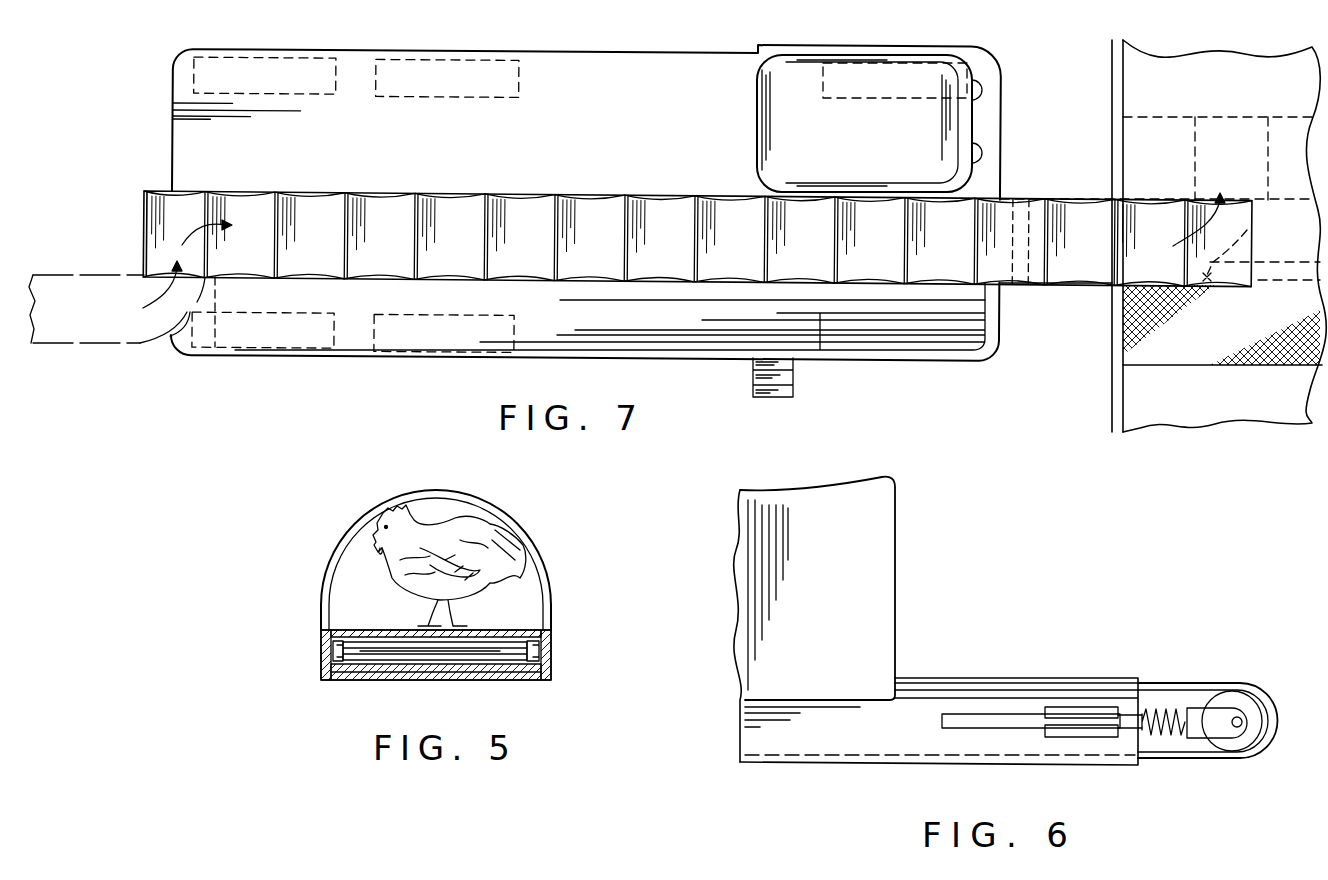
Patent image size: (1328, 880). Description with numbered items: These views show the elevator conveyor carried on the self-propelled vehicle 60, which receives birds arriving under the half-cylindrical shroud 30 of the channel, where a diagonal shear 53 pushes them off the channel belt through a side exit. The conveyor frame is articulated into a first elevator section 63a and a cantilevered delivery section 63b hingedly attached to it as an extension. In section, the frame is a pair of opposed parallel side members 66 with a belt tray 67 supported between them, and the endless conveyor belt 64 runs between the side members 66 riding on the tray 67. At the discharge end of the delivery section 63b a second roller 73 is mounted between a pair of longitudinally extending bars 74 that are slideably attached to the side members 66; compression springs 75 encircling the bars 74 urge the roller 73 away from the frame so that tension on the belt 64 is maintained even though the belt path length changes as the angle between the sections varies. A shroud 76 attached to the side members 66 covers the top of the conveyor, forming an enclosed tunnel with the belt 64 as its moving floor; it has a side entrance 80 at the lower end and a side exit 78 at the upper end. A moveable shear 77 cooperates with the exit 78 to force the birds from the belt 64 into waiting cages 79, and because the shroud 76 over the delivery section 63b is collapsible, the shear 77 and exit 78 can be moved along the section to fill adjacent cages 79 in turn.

In FIG. 7, the shroud 30 is at (105, 355).
In FIG. 7, the shear 53 is at (183, 338).
In FIG. 7, the self-propelled vehicle 60 is at (665, 50).
In FIG. 7, the first elevator section 63a is at (658, 283).
In FIG. 7, the cantilevered delivery section 63b is at (1080, 284).
In FIG. 6, the cantilevered delivery section 63b is at (941, 765).
In FIG. 5, the endless conveyor belt 64 is at (541, 630).
In FIG. 6, the endless conveyor belt 64 is at (1228, 683).
In FIG. 5, the side members 66 is at (330, 651).
In FIG. 6, the side members 66 is at (1114, 742).
In FIG. 5, the belt tray 67 is at (330, 629).
In FIG. 6, the second roller 73 is at (1263, 718).
In FIG. 7, the longitudinally extending bars 74 is at (1222, 117).
In FIG. 6, the longitudinally extending bars 74 is at (993, 718).
In FIG. 6, the compression springs 75 is at (1157, 710).
In FIG. 7, the shroud 76 is at (446, 210).
In FIG. 5, the shroud 76 is at (430, 489).
In FIG. 7, the shear 77 is at (1208, 280).
In FIG. 7, the side exit 78 is at (1237, 200).
In FIG. 7, the cages 79 is at (1172, 116).
In FIG. 7, the side entrance 80 is at (157, 275).